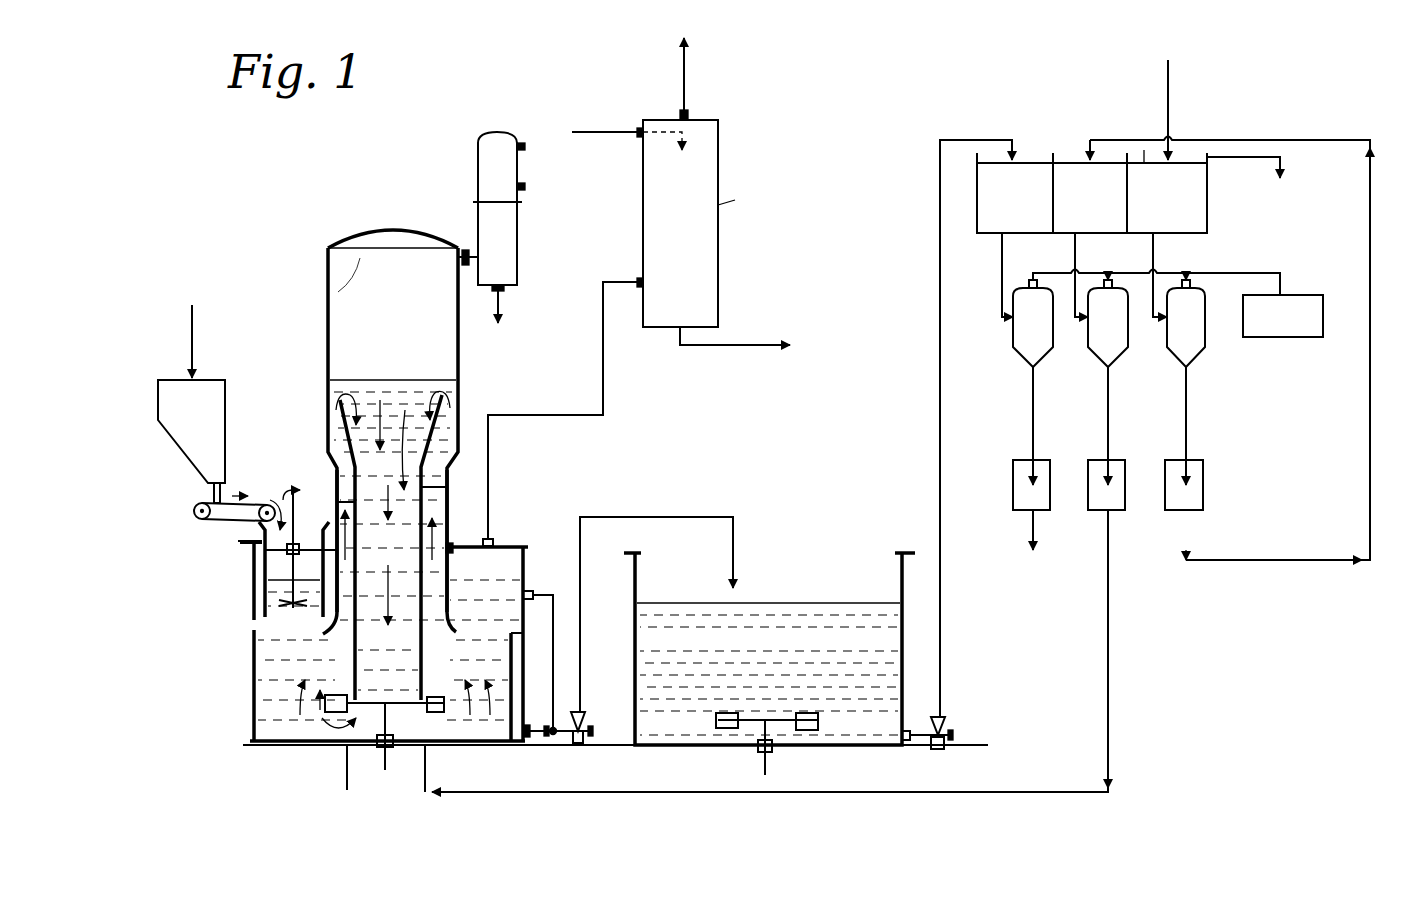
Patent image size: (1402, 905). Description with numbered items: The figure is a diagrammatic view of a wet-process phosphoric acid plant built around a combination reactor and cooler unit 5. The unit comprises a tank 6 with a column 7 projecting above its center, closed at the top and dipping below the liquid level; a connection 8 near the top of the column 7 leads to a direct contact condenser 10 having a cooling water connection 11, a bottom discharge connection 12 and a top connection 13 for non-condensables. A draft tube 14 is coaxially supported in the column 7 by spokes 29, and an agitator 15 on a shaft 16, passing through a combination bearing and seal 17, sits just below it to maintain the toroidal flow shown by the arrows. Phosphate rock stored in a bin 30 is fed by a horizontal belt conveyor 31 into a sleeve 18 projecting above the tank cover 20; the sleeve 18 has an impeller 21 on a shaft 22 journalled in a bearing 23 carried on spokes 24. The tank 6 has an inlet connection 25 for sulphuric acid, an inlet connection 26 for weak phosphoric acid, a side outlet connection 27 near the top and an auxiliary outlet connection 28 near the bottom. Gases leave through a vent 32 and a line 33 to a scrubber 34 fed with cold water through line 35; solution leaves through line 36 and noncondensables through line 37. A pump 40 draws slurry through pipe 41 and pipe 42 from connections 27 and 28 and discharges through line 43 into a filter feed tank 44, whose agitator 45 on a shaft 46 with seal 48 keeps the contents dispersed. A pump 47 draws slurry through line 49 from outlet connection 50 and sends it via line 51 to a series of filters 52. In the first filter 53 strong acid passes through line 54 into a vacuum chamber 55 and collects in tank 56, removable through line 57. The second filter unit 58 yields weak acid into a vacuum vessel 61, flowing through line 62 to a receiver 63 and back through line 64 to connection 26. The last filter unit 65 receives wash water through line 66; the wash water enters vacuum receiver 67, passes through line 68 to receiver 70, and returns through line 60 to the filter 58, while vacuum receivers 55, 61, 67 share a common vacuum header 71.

The combination reactor and cooler unit 5 is at (325, 352).
The tank 6 is at (253, 597).
The column 7 is at (328, 273).
The connection 8 is at (467, 250).
The direct contact condenser 10 is at (521, 230).
The connection 11 is at (526, 189).
The discharge connection 12 is at (506, 302).
The connection 13 is at (526, 149).
The draft tube 14 is at (336, 462).
The agitator 15 is at (325, 710).
The shaft 16 is at (385, 768).
The combination bearing and seal 17 is at (390, 748).
The sleeve 18 is at (254, 563).
The tank cover 20 is at (520, 545).
The impeller 21 is at (291, 604).
The shaft 22 is at (305, 495).
The bearing 23 is at (297, 547).
The spokes 24 is at (258, 550).
The inlet connection 25 is at (343, 762).
The inlet connection 26 is at (430, 768).
The side outlet connection 27 is at (530, 594).
The auxiliary outlet connection 28 is at (523, 742).
The spokes 29 is at (338, 492).
The bin 30 is at (175, 380).
The horizontal belt conveyor 31 is at (262, 503).
The vent 32 is at (492, 538).
The line 33 is at (600, 374).
The scrubber 34 is at (718, 268).
The line 35 is at (606, 133).
The line 36 is at (718, 345).
The line 37 is at (686, 76).
The pump 40 is at (583, 725).
The pipe 41 is at (556, 643).
The pipe 42 is at (546, 748).
The line 43 is at (584, 590).
The filter feed tank 44 is at (905, 575).
The agitator 45 is at (812, 727).
The shaft 46 is at (768, 763).
The pump 47 is at (948, 725).
The seal 48 is at (757, 750).
The line 49 is at (926, 750).
The outlet connection 50 is at (906, 731).
The line 51 is at (947, 418).
The series of filters 52 is at (1063, 114).
The first filter 53 is at (1022, 158).
The line 54 is at (1002, 256).
The chamber 55 is at (1026, 289).
The tank 56 is at (1048, 462).
The line 57 is at (1028, 531).
The second filter unit 58 is at (1082, 158).
The line 60 is at (1286, 142).
The suction or vacuum vessel 61 is at (1120, 336).
The line 62 is at (1112, 401).
The receiver 63 is at (1122, 462).
The line 64 is at (1112, 676).
The last filter unit 65 is at (1145, 158).
The line 66 is at (1170, 93).
The vacuum receiver 67 is at (1197, 336).
The line 68 is at (1190, 409).
The receiver 70 is at (1200, 482).
The common vacuum header 71 is at (1097, 273).